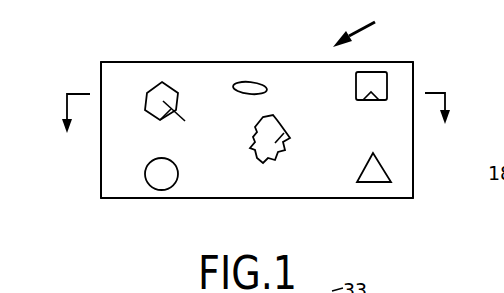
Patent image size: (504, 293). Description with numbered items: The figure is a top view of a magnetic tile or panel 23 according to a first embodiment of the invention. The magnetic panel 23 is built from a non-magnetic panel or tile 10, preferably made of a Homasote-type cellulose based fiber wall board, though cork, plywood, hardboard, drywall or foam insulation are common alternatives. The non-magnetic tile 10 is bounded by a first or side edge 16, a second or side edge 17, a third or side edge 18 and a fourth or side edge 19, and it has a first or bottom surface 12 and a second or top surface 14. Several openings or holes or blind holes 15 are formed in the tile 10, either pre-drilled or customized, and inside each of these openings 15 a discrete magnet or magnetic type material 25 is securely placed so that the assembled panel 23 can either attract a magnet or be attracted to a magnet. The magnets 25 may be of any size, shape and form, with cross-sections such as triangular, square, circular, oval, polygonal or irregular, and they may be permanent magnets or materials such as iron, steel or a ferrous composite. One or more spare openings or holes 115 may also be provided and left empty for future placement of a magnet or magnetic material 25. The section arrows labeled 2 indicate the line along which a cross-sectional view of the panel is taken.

The non-magnetic panel or tile 10 is at (225, 62).
The second or side edge 17 is at (282, 62).
The first surface or bottom surface 12 is at (323, 198).
The fourth or side edge 19 is at (266, 198).
The third or side edge 18 is at (101, 158).
The first or side edge 16 is at (413, 157).
The section line 2- 2 is at (254, 113).
The magnetic tile or panel 23 is at (367, 29).
The spare opening or hole 115 is at (266, 91).
The opening or hole or blind hole 15 is at (167, 170).
The discrete magnet or magnetic type material 25 is at (157, 168).
The second surface or top surface 14 is at (320, 186).